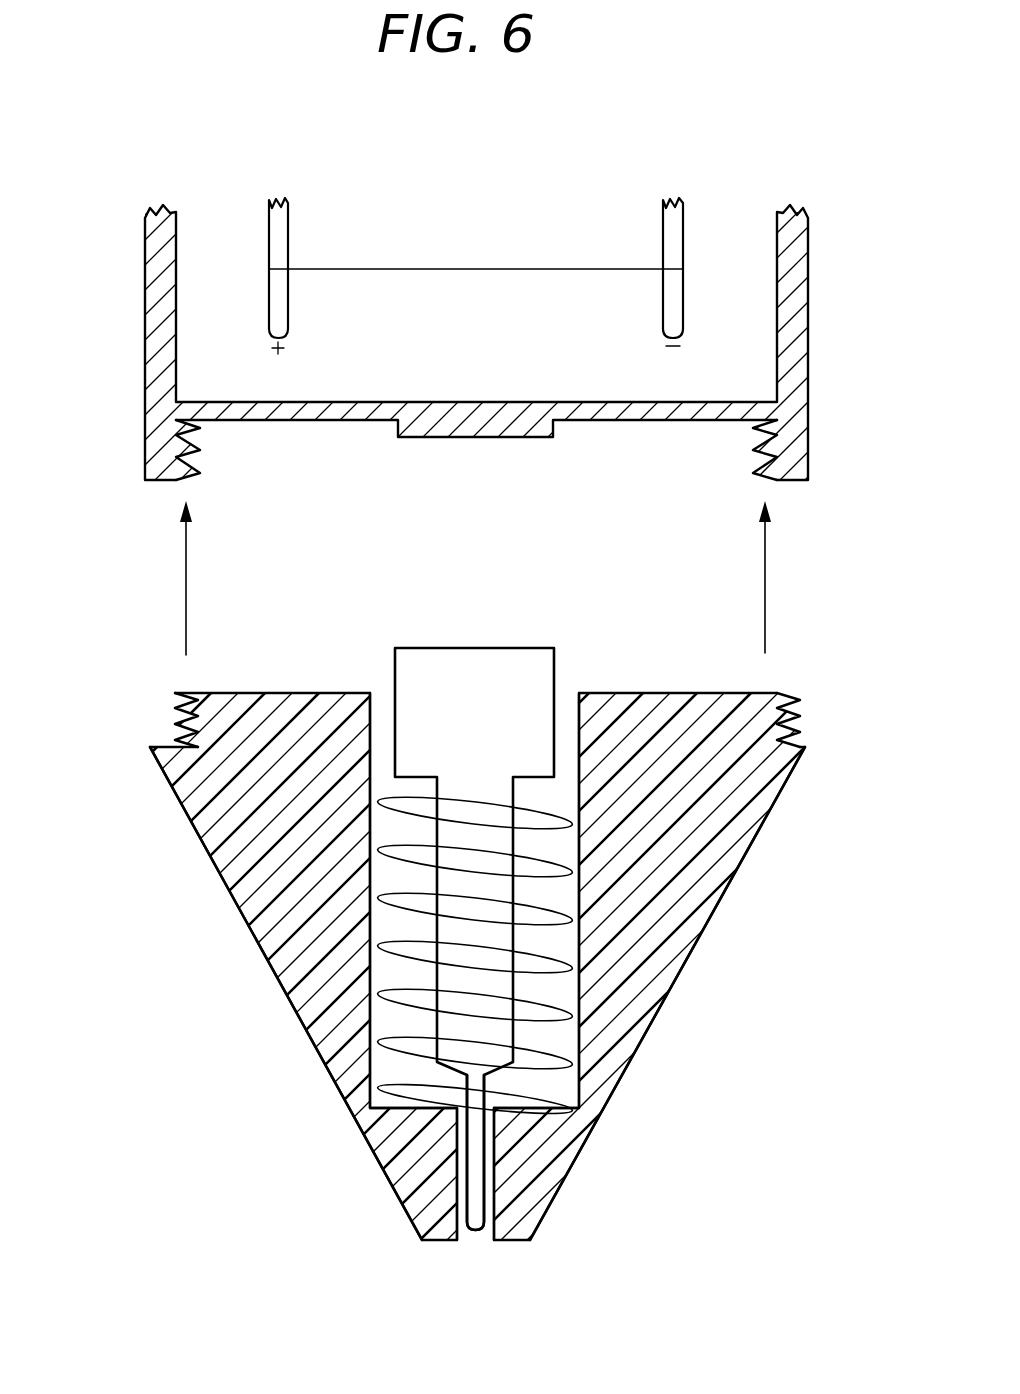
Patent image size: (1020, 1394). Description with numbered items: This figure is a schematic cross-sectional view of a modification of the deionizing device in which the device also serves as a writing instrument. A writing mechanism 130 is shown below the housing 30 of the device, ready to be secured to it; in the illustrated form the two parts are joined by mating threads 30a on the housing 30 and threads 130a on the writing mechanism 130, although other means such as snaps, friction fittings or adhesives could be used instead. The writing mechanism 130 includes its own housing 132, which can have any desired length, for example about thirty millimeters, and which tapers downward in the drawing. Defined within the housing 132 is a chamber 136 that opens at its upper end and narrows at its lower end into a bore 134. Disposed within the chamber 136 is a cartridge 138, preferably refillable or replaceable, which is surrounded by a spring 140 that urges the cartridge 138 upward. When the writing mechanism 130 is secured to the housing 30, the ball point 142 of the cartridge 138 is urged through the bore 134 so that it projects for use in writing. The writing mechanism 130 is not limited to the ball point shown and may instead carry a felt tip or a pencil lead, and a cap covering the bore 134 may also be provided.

The housing 30 is at (808, 358).
The threads 30a is at (208, 457).
The writing mechanism 130 is at (673, 1032).
The threads 130a is at (163, 723).
The housing 132 is at (745, 858).
The bore 134 is at (512, 1240).
The chamber 136 is at (565, 700).
The cartridge 138 is at (494, 709).
The spring 140 is at (392, 795).
The ball point 142 is at (470, 1240).